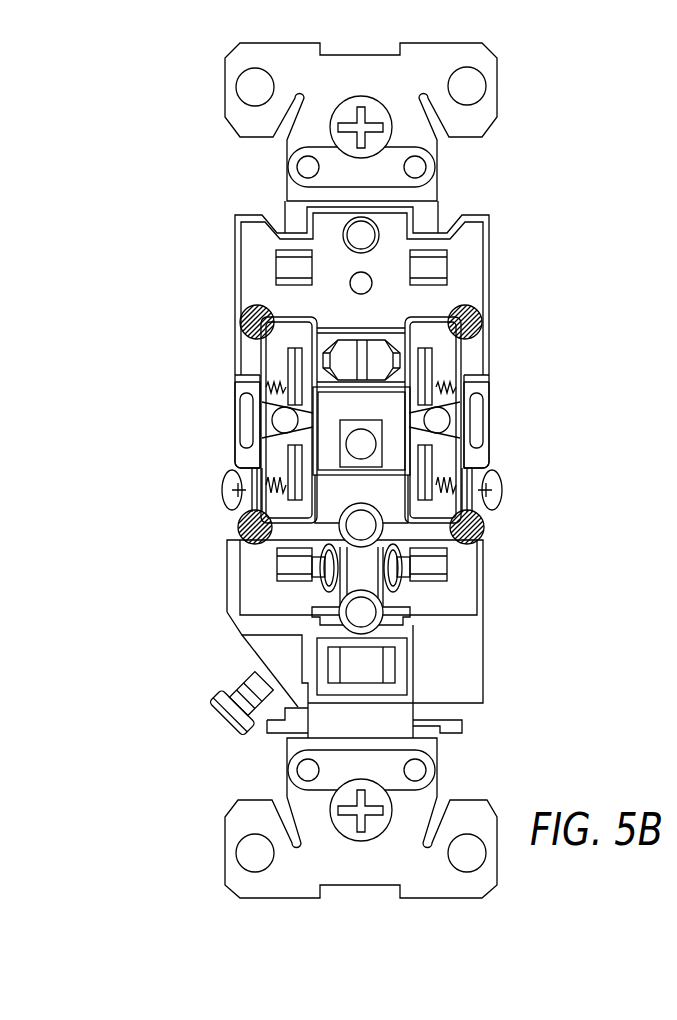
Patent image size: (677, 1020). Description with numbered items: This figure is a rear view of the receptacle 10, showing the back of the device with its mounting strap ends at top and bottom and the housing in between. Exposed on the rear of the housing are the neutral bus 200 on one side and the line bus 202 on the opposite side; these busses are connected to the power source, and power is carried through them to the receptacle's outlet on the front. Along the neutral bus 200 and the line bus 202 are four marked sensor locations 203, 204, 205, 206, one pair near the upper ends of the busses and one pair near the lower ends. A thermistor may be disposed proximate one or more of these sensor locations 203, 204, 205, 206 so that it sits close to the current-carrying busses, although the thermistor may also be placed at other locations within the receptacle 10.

The receptacle 10 is at (208, 66).
The neutral bus 200 is at (214, 408).
The line bus 202 is at (510, 415).
The sensor location 203 is at (247, 308).
The sensor location 204 is at (243, 535).
The sensor location 205 is at (480, 318).
The sensor location 206 is at (482, 533).